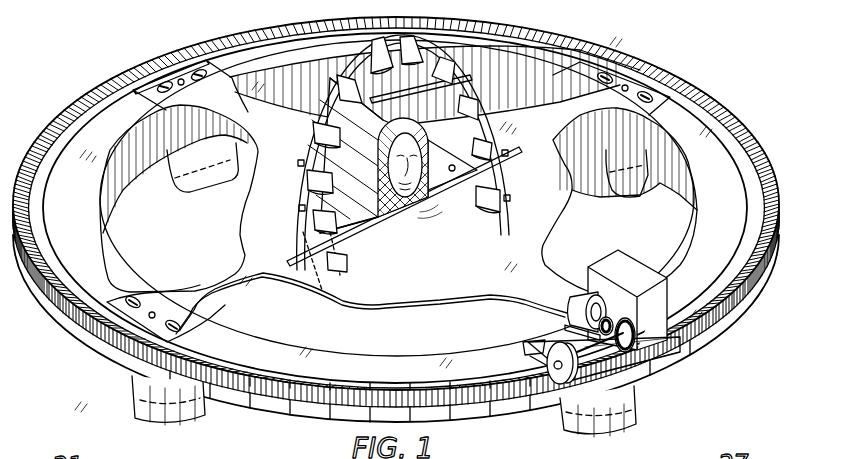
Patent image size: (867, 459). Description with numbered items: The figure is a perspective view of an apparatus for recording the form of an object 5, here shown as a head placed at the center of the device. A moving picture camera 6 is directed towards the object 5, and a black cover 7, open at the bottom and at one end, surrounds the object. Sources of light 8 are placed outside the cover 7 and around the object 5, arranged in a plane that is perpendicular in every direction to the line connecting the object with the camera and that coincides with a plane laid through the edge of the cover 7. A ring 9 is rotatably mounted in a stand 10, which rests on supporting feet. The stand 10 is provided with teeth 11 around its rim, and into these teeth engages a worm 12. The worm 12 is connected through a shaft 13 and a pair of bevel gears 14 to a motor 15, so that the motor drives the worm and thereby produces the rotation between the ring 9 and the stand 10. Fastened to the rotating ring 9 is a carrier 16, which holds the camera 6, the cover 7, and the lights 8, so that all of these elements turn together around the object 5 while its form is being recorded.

The object 5 is at (412, 200).
The moving picture camera 6 is at (658, 312).
The black cover 7 is at (362, 182).
The sources of light 8 is at (487, 208).
The ring 9 is at (102, 250).
The stand 10 is at (128, 383).
The teeth 11 is at (58, 116).
The worm 12 is at (542, 358).
The shaft 13 is at (603, 352).
The pair of bevel gears 14 is at (668, 342).
The motor 15 is at (566, 311).
The carrier 16 is at (374, 297).